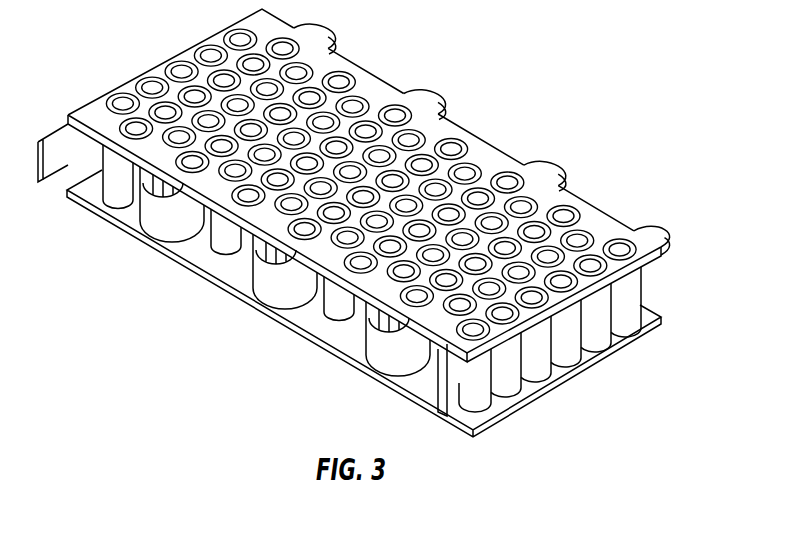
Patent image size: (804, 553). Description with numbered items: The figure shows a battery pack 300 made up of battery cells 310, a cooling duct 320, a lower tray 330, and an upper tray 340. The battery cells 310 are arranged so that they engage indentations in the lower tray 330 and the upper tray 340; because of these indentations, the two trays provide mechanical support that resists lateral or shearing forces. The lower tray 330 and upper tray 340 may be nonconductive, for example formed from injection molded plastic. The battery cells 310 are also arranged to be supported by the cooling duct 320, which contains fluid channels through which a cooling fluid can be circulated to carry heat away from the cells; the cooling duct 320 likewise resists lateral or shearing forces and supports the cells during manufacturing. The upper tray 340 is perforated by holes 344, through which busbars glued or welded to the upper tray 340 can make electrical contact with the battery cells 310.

The battery pack 300 is at (565, 51).
The battery cells 310 is at (233, 262).
The cooling duct 320 is at (147, 231).
The lower tray 330 is at (575, 373).
The upper tray 340 is at (488, 152).
The holes 344 is at (212, 53).